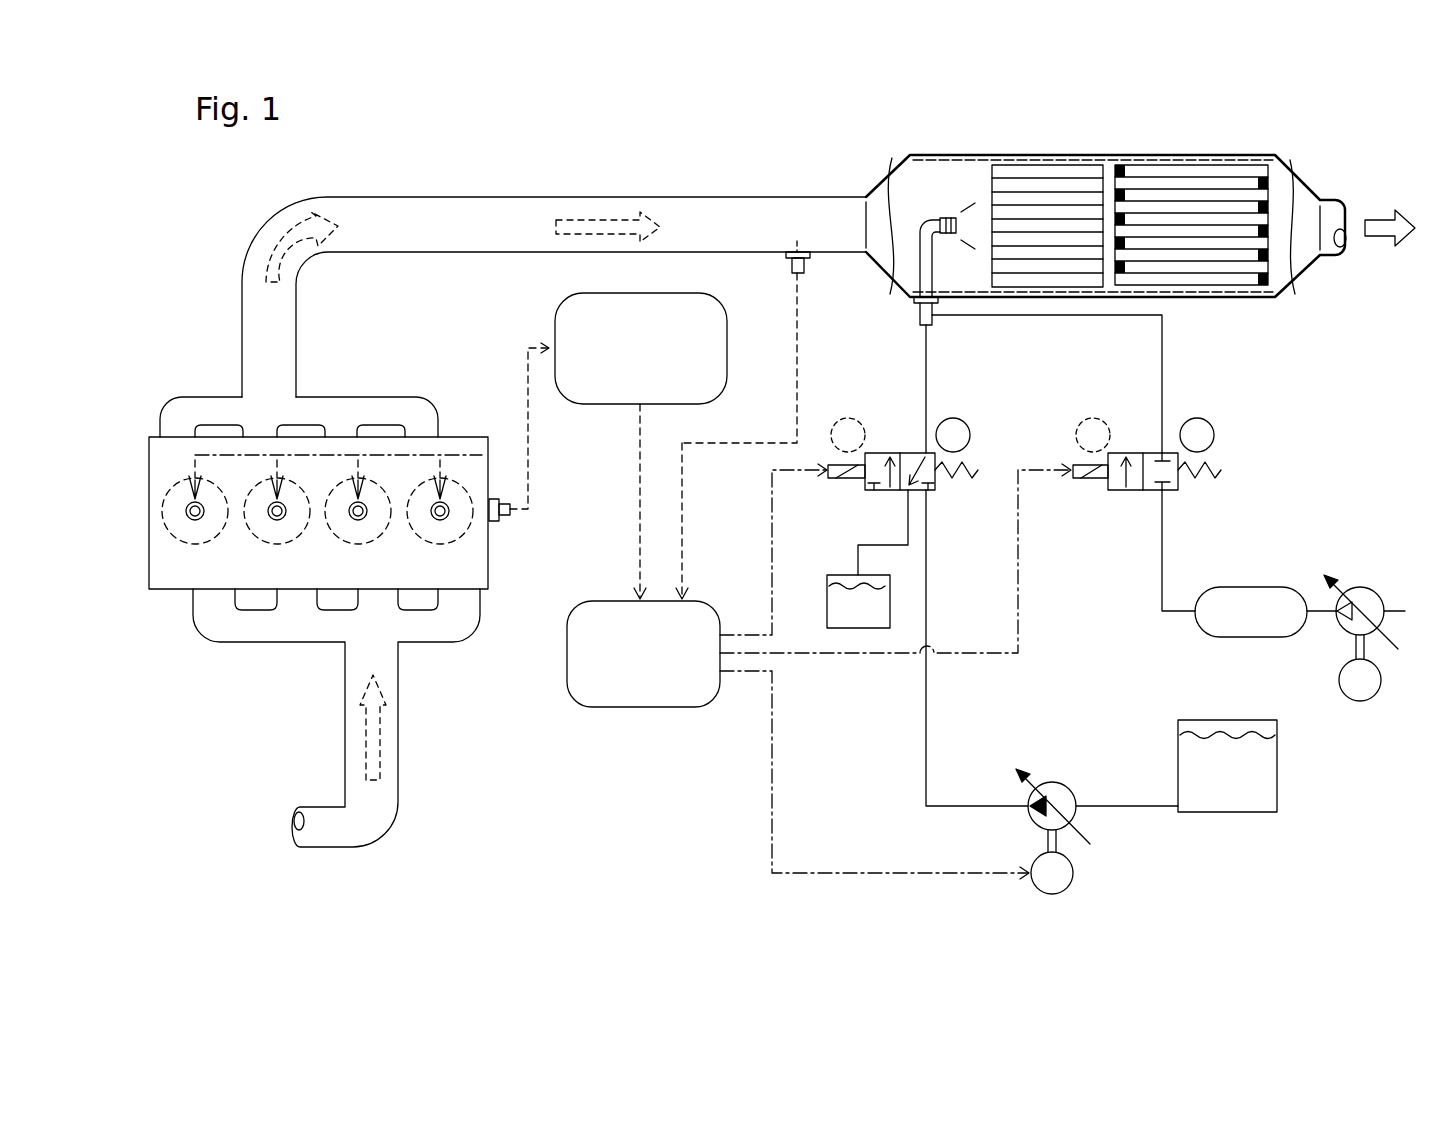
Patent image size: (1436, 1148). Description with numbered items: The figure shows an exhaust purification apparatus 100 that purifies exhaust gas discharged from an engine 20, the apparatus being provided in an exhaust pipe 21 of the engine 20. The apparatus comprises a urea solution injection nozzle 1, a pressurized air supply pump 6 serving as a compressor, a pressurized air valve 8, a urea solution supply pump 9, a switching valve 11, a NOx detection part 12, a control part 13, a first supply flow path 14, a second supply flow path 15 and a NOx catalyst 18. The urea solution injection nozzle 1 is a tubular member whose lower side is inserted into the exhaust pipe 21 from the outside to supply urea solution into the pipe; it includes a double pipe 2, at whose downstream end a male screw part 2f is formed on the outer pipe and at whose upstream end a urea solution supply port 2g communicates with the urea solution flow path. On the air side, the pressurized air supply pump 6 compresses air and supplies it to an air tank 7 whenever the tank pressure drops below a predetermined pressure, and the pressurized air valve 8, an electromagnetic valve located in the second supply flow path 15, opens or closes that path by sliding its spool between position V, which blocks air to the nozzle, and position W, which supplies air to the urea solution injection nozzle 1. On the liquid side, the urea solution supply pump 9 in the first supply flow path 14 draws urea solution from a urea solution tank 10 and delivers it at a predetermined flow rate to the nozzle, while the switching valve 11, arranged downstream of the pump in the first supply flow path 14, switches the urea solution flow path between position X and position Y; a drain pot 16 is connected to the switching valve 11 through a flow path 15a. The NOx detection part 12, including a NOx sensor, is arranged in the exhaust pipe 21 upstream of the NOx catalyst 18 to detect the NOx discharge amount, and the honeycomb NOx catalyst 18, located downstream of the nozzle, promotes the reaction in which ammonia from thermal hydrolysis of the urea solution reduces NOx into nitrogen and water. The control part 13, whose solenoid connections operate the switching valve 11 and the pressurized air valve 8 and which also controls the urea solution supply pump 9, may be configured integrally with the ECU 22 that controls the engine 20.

The exhaust purification apparatus 100 is at (1348, 124).
The urea solution injection nozzle 1 is at (940, 212).
The double pipe 2 is at (925, 262).
The male screw part 2f is at (918, 330).
The urea solution supply port 2g is at (937, 318).
The pressurized air supply pump 6 is at (1378, 593).
The air tank 7 is at (1250, 637).
The pressurized air valve 8 is at (1122, 503).
The urea solution supply pump 9 is at (1050, 782).
The urea solution tank 10 is at (1240, 803).
The switching valve 11 is at (888, 418).
The NOx detection part 12 is at (806, 276).
The control part 13 is at (648, 707).
The first supply flow path 14 is at (910, 757).
The second supply flow path 15 is at (1145, 603).
The flow path 15a is at (905, 511).
The drain pot 16 is at (872, 620).
The NOx catalyst 18 is at (1045, 170).
The engine 20 is at (459, 437).
The exhaust pipe 21 is at (241, 350).
The ECU 22 is at (622, 405).